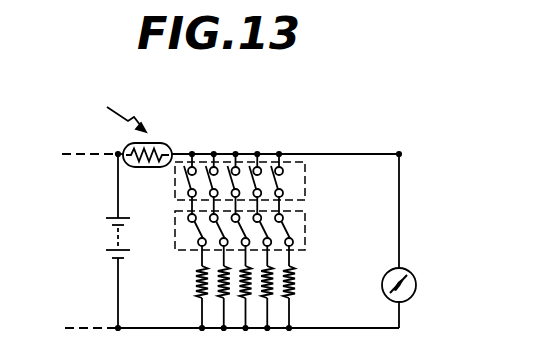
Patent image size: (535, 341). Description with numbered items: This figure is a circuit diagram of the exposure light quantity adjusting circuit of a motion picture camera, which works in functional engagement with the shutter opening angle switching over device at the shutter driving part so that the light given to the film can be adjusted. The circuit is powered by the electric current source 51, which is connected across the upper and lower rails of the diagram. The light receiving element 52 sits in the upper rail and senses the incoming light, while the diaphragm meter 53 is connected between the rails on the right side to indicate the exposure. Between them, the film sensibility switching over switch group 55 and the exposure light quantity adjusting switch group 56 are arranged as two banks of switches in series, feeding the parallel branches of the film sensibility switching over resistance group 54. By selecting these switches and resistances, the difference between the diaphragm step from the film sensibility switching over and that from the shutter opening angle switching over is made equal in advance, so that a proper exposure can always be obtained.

The electric current source 51 is at (105, 243).
The light receiving element 52 is at (148, 137).
The diaphragm meter 53 is at (404, 269).
The film sensibility switching over resistance group 54 is at (294, 290).
The film sensibility switching over switch group 55 is at (174, 188).
The exposure light quantity adjusting switch group 56 is at (172, 234).